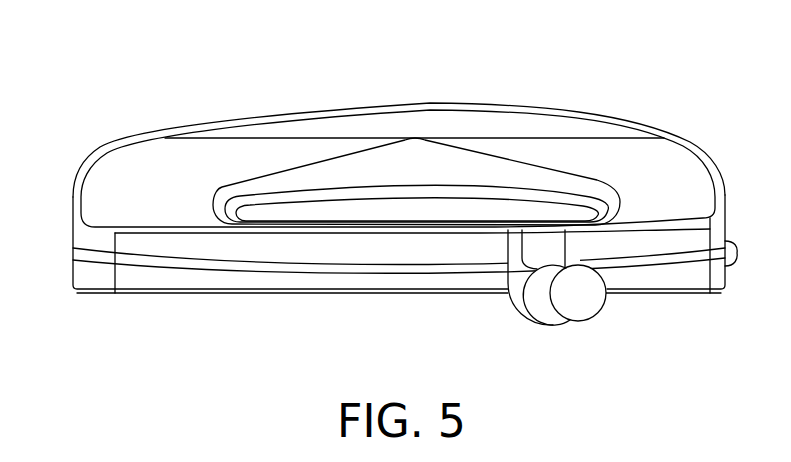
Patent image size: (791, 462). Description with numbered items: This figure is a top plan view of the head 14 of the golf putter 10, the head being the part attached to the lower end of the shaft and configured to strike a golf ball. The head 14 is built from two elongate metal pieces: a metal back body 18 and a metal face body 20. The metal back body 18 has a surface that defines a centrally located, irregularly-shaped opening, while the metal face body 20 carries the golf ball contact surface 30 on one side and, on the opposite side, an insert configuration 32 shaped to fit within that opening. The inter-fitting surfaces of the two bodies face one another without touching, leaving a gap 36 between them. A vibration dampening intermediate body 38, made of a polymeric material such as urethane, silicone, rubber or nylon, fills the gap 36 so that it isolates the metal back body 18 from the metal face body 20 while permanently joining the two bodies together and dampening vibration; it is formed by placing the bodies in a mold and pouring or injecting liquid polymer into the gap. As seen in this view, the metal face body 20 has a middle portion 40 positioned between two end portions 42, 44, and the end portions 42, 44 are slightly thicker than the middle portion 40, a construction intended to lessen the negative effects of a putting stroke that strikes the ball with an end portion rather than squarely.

The golf putter 10 is at (668, 80).
The head 14 is at (92, 128).
The metal back body 18 is at (240, 117).
The metal face body 20 is at (210, 278).
The golf ball contact surface 30 is at (330, 293).
The insert configuration 32 is at (480, 210).
The gap 36 is at (740, 252).
The vibration dampening intermediate body 38 is at (385, 165).
The middle portion 40 is at (417, 283).
The end portion 42 is at (100, 284).
The end portion 44 is at (695, 278).